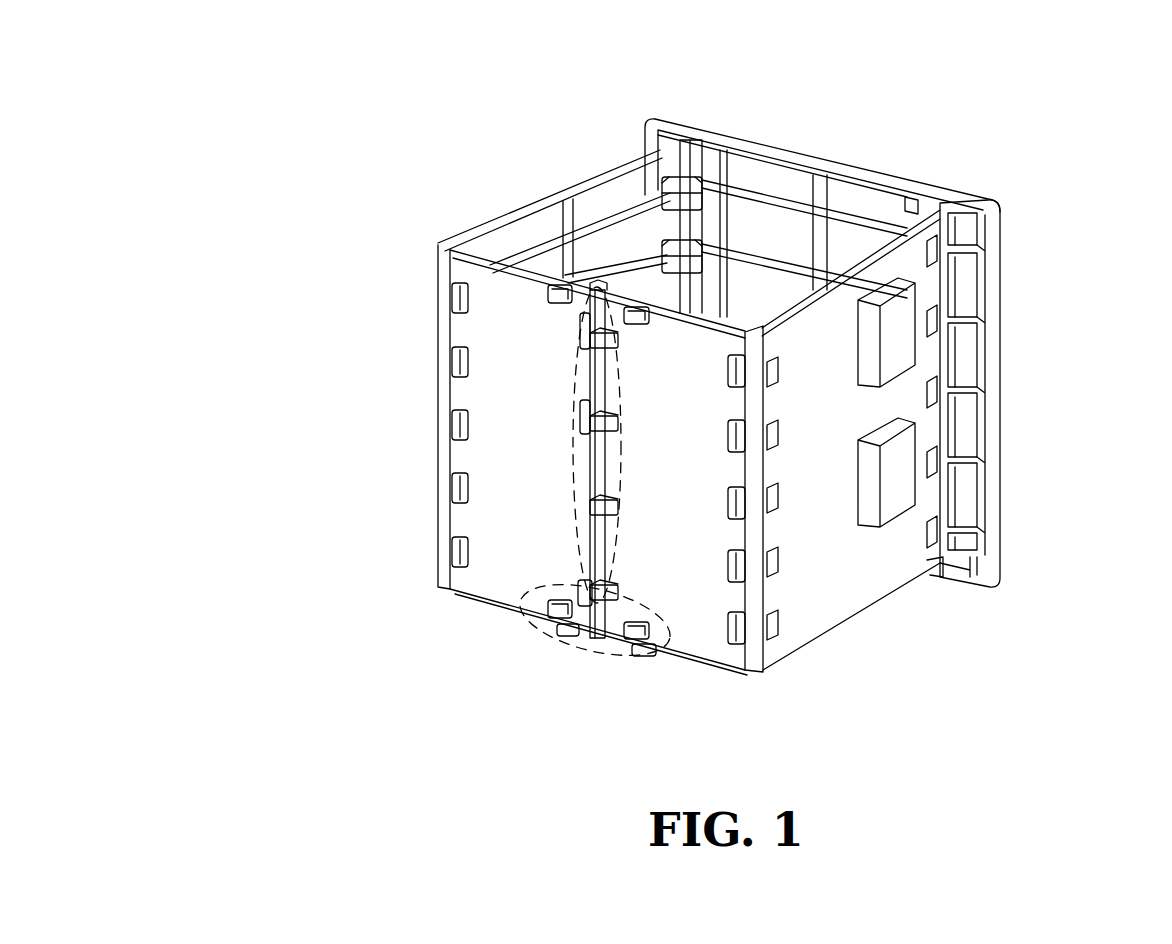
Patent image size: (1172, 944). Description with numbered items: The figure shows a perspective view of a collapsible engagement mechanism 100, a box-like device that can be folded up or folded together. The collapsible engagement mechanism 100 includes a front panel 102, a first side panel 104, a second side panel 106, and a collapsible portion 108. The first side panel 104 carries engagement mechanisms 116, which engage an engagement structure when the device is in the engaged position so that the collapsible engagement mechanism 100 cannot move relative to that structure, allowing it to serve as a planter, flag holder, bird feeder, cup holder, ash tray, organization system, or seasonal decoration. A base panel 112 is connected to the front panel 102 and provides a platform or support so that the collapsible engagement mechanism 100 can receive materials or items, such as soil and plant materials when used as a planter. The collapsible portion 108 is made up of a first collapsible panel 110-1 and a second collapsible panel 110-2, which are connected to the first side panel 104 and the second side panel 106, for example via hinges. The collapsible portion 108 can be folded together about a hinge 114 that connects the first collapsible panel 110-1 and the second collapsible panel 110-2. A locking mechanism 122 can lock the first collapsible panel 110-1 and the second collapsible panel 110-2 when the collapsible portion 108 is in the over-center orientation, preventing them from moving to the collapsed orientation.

The collapsible engagement mechanism 100 is at (243, 104).
The front panel 102 is at (797, 155).
The first side panel 104 is at (857, 590).
The second side panel 106 is at (528, 208).
The collapsible portion 108 is at (734, 686).
The first collapsible panel 110-1 is at (703, 622).
The second collapsible panel 110-2 is at (492, 443).
The base panel 112 is at (483, 602).
The hinge 114 is at (578, 523).
The engagement mechanisms 116 is at (892, 343).
The locking mechanism 122 is at (530, 622).